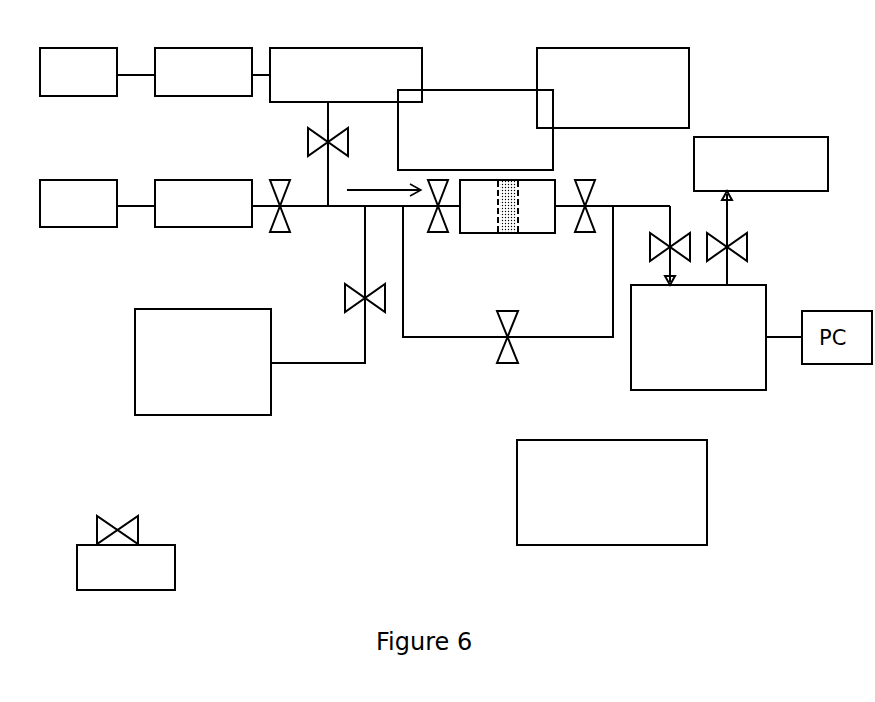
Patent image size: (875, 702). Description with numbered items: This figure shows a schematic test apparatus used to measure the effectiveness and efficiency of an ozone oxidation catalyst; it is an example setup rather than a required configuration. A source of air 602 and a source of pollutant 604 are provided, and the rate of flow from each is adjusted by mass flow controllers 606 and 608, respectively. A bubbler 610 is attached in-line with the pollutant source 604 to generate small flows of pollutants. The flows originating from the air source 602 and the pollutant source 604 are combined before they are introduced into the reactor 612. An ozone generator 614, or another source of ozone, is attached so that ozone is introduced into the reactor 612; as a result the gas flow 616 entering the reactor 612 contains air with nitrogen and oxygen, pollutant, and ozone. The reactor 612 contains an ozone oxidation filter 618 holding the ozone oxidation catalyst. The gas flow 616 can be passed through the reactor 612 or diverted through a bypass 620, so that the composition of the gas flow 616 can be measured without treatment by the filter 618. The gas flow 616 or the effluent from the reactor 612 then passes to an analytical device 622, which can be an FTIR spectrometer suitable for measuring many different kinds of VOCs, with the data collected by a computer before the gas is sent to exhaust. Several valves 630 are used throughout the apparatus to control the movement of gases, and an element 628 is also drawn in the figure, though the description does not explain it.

The source of air 602 is at (78, 203).
The source of pollutant 604 is at (78, 72).
The mass flow controller 606 is at (203, 203).
The mass flow controller 608 is at (203, 72).
The bubbler 610 is at (346, 75).
The reactor 612 is at (546, 194).
The ozone generator 614 is at (203, 362).
The gas flow 616 is at (384, 180).
The ozone oxidation filter 618 is at (489, 194).
The bypass 620 is at (536, 337).
The analytical device 622 is at (698, 337).
The exhaust / vent 628 is at (761, 164).
The valves 630 is at (126, 553).